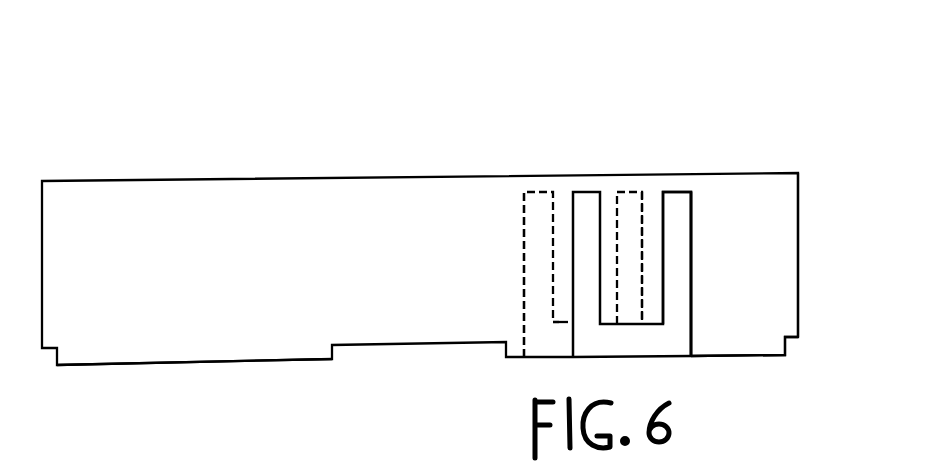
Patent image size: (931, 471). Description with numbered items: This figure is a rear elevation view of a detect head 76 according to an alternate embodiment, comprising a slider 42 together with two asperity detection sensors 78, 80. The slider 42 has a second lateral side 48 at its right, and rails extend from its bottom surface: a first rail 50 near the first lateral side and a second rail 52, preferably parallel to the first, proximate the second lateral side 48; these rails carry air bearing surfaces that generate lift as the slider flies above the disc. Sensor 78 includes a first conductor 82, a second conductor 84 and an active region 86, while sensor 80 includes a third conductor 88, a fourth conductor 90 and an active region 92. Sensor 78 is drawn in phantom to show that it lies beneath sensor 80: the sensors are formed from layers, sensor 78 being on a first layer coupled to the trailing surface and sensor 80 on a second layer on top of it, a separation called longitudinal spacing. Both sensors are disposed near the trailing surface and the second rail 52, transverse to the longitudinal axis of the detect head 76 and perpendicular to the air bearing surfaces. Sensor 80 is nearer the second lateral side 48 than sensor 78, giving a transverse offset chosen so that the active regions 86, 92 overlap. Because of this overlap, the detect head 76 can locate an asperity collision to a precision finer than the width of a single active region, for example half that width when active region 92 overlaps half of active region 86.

The slider 42 is at (136, 180).
The second lateral side 48 is at (798, 232).
The first rail 50 is at (233, 362).
The second rail 52 is at (768, 357).
The detect head 76 is at (591, 87).
The asperity detection sensor 78 is at (518, 277).
The asperity detection sensor 80 is at (697, 314).
The first conductor 82 is at (535, 191).
The second conductor 84 is at (631, 192).
The active region 86 is at (568, 322).
The third conductor 88 is at (592, 191).
The fourth conductor 90 is at (686, 191).
The active region 92 is at (646, 322).